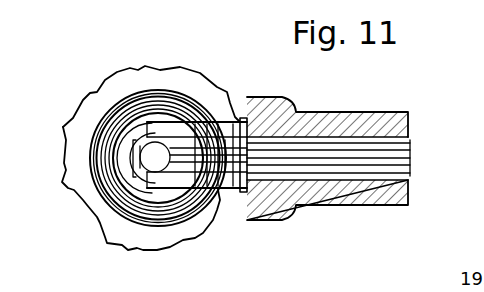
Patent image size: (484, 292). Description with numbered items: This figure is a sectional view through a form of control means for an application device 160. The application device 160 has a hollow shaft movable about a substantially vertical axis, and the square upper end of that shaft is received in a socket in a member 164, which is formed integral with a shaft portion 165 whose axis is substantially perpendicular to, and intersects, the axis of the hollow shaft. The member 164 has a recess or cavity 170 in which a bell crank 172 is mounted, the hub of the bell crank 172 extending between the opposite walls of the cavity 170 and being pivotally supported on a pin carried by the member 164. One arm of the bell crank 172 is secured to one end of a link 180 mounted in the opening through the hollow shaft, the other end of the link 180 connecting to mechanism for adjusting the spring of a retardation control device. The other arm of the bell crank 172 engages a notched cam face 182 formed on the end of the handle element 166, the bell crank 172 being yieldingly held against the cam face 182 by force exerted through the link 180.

The application device 160 is at (133, 252).
The member 164 is at (118, 130).
The shaft portion 165 is at (408, 143).
The handle element 166 is at (345, 190).
The recess or cavity 170 is at (195, 118).
The bell crank 172 is at (215, 215).
The link 180 is at (122, 191).
The notched cam face 182 is at (240, 120).